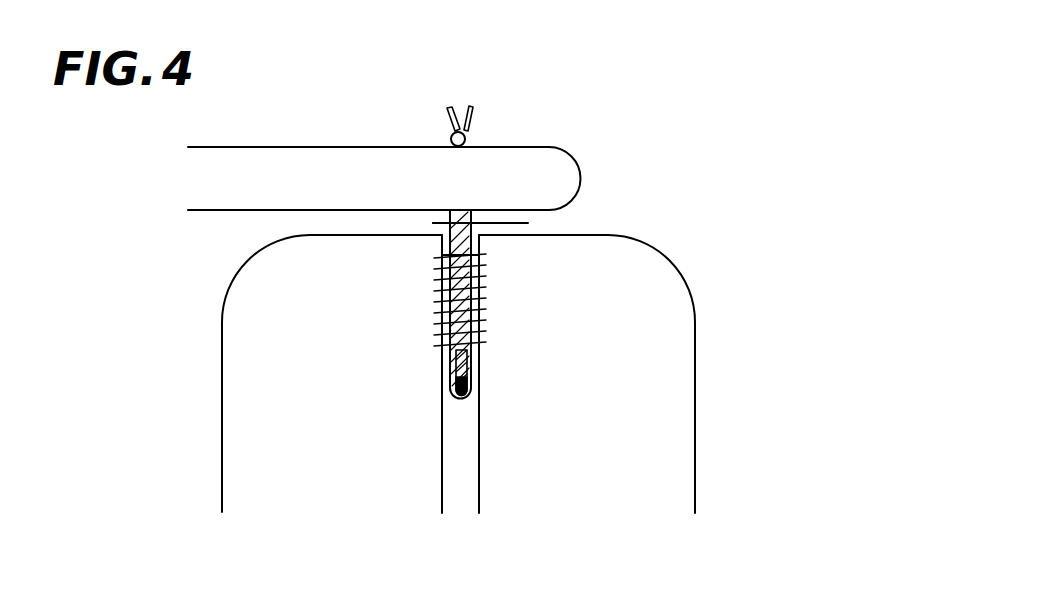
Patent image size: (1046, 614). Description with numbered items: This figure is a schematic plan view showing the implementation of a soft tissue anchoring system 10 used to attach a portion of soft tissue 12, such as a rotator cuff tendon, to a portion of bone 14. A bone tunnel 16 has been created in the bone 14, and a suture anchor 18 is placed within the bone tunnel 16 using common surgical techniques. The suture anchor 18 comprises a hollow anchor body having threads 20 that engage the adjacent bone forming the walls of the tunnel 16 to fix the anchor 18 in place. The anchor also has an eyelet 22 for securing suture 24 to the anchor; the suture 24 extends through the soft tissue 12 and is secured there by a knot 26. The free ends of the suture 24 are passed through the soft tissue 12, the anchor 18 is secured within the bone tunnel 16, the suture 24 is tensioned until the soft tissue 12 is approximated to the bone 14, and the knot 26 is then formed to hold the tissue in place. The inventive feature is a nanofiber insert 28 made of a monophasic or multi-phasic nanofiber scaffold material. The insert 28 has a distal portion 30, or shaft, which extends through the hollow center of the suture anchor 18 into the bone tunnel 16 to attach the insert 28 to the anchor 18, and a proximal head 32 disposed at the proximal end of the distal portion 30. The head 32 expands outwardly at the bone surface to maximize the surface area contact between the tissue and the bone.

The soft tissue anchoring system 10 is at (730, 181).
The soft tissue 12 is at (550, 167).
The bone 14 is at (640, 472).
The bone tunnel 16 is at (442, 429).
The suture anchor 18 is at (424, 318).
The threads 20 is at (445, 258).
The eyelet 22 is at (480, 250).
The suture 24 is at (450, 128).
The knot 26 is at (466, 137).
The nanofiber insert 28 is at (528, 223).
The distal portion 30 is at (480, 288).
The proximal head 32 is at (433, 223).